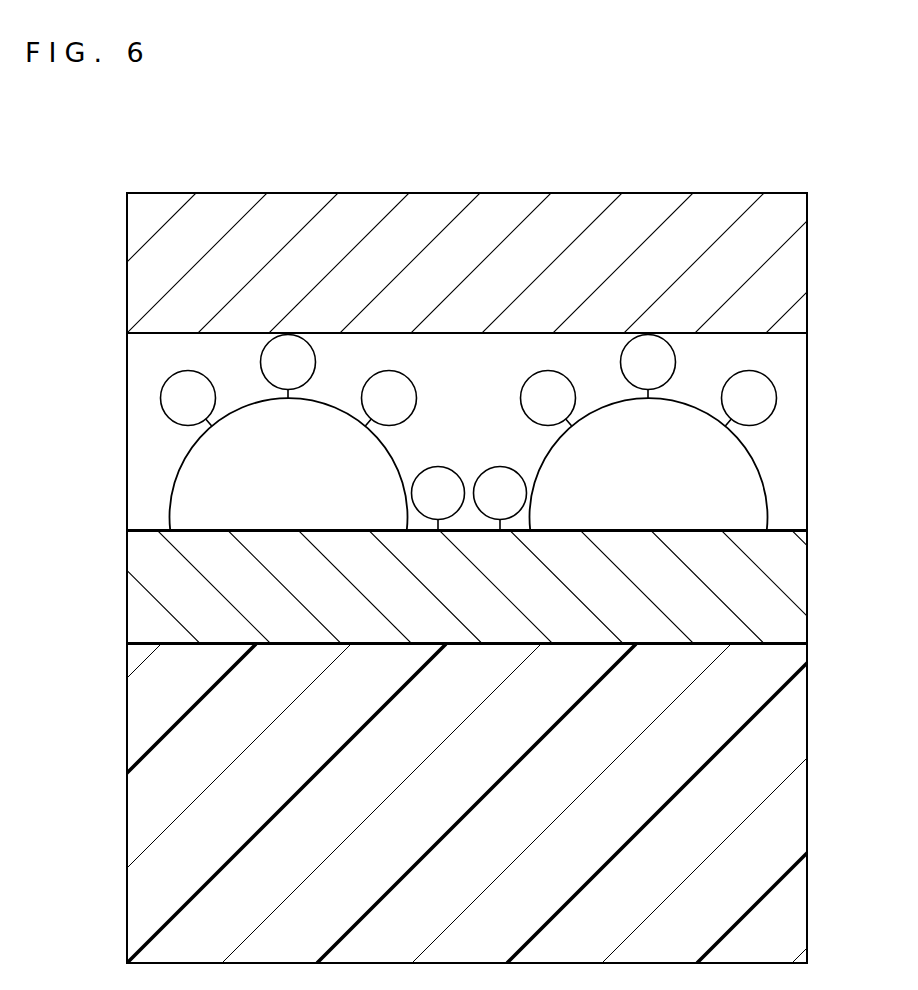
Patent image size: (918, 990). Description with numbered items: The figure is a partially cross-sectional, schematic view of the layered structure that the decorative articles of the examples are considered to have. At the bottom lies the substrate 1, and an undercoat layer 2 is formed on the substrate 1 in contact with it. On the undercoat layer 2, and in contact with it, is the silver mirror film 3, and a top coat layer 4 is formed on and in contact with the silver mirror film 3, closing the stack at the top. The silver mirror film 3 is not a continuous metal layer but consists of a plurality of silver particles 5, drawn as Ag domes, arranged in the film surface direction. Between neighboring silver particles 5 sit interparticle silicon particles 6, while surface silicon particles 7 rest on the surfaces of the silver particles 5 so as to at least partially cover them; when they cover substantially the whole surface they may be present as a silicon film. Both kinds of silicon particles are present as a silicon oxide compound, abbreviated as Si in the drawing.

The substrate 1 is at (793, 808).
The undercoat layer 2 is at (793, 588).
The silver mirror film 3 is at (793, 438).
The top coat layer 4 is at (793, 257).
The silver particles 5 is at (750, 495).
The interparticle silicon particles 6 is at (487, 470).
The surface silicon particles 7 is at (620, 360).